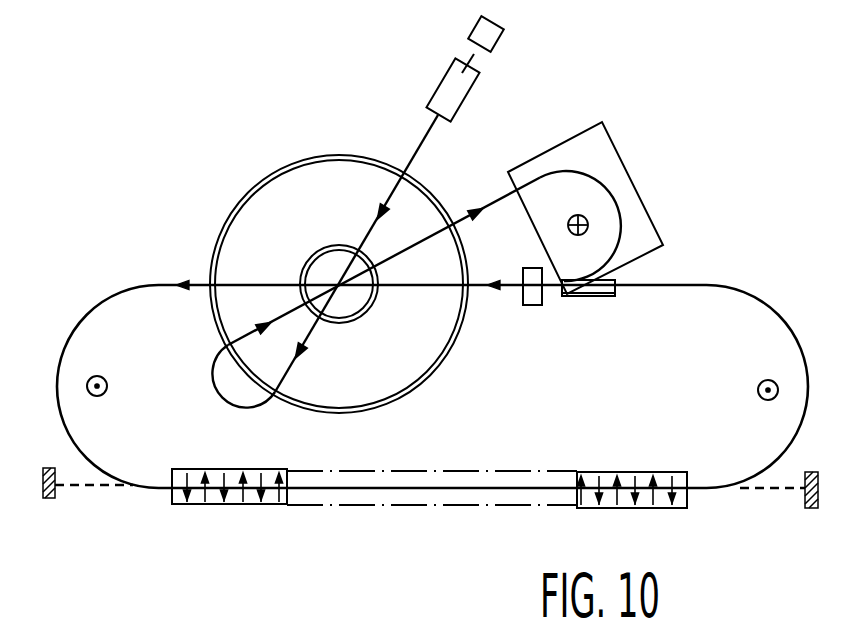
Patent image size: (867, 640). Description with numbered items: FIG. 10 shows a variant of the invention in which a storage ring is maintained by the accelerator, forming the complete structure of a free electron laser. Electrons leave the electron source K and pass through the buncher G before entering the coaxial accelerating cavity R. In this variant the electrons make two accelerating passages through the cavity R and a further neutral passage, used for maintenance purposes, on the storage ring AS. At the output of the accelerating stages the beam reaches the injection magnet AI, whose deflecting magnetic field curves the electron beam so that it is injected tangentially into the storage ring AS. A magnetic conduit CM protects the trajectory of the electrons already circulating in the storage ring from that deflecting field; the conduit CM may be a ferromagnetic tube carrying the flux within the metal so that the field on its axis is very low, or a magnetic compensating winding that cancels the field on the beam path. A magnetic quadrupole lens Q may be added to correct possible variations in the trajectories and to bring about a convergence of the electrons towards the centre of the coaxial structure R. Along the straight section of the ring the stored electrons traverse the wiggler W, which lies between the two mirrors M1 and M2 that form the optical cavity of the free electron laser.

The buncher G is at (445, 88).
The electron source K is at (496, 37).
The coaxial accelerating cavity R is at (281, 166).
The storage ring AS is at (132, 285).
The injection magnet AI is at (620, 172).
The quadrupole lens Q is at (531, 306).
The magnetic conduit CM is at (600, 297).
The wiggler W is at (432, 507).
The mirror M1 is at (48, 499).
The mirror M2 is at (810, 508).